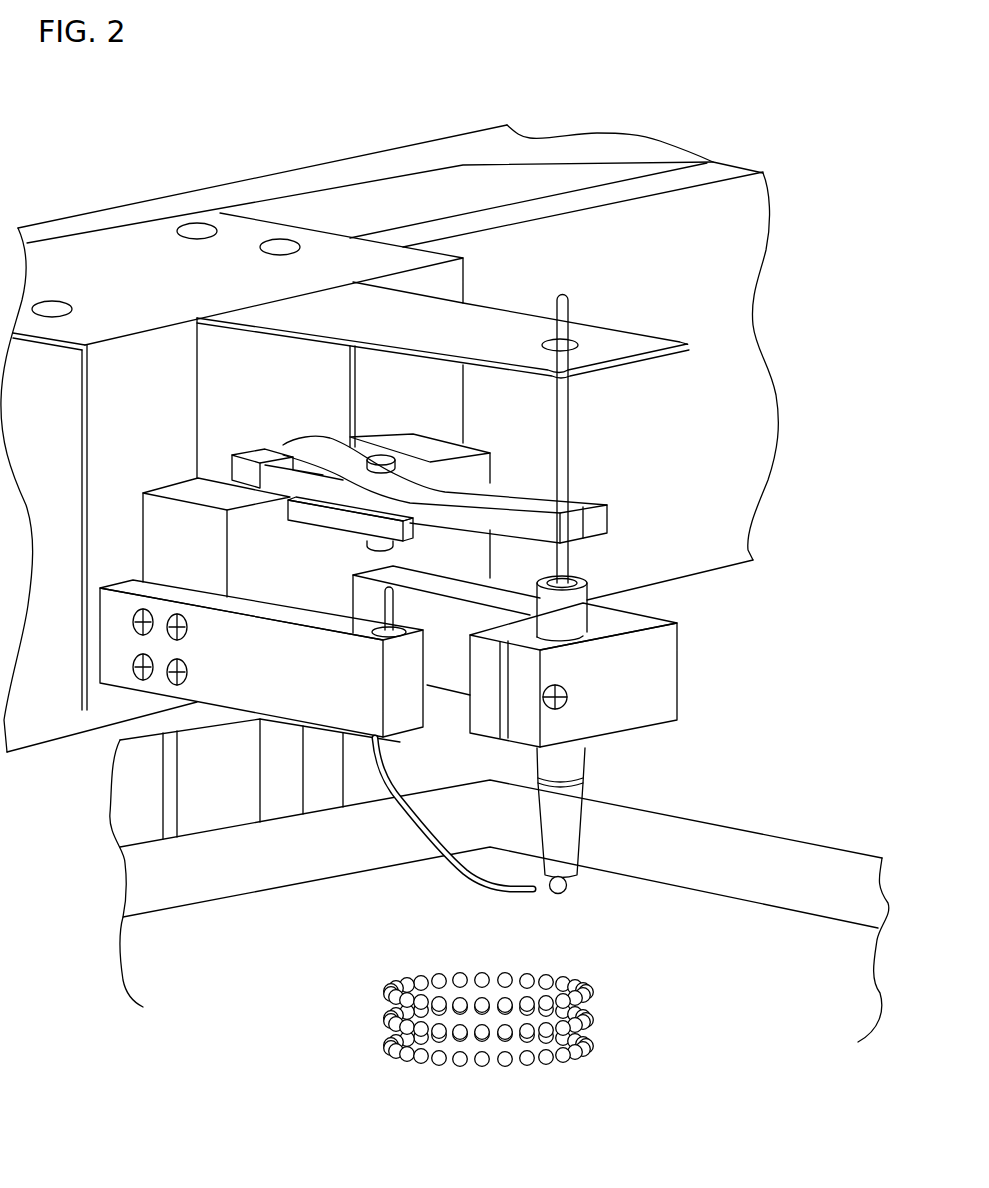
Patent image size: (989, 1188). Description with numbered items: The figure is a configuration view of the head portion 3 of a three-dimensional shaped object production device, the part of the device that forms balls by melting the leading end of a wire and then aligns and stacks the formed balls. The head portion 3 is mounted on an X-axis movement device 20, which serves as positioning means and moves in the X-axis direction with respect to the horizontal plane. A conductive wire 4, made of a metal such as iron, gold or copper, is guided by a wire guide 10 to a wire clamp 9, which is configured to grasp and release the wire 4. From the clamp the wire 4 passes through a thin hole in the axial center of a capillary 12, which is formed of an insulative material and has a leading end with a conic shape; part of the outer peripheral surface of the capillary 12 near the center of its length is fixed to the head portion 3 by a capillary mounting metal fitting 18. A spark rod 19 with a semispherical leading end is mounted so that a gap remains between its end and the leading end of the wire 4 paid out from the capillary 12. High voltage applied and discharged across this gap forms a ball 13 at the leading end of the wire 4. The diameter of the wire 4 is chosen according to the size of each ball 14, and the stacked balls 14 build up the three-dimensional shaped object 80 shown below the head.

The head portion 3 is at (655, 446).
The wire 4 is at (566, 476).
The wire clamp 9 is at (503, 513).
The wire guide 10 is at (627, 341).
The capillary 12 is at (584, 761).
The ball 13 is at (568, 890).
The ball 14 is at (487, 1040).
The capillary mounting metal fitting 18 is at (594, 695).
The spark rod 19 is at (453, 857).
The X-axis movement device 20 is at (463, 164).
The three-dimensional shaped object 80 is at (550, 1060).